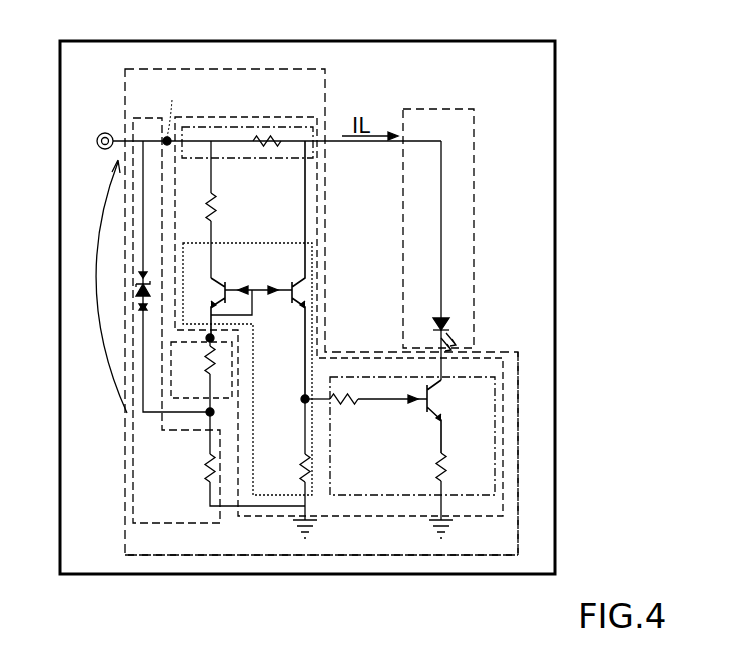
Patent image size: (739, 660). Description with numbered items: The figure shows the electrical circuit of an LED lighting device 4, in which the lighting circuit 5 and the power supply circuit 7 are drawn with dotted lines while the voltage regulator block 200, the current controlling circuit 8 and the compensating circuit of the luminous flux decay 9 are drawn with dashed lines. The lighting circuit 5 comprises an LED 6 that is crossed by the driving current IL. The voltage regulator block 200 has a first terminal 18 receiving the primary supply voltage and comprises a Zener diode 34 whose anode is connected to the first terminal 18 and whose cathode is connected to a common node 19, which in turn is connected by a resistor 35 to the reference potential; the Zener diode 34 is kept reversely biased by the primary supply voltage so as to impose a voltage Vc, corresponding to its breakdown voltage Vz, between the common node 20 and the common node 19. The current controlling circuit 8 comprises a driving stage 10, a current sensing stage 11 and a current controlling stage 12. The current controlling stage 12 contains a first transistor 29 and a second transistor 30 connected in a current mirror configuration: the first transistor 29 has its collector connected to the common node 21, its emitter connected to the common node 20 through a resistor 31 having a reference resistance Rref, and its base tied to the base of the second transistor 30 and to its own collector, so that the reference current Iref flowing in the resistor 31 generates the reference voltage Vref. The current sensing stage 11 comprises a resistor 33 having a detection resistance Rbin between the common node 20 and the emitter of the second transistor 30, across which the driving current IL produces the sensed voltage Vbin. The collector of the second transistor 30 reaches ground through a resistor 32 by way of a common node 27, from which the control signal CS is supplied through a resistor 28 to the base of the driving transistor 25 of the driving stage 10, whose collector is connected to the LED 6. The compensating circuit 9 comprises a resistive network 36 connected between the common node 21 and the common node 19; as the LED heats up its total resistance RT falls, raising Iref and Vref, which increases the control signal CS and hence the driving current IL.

The lighting device 4 is at (84, 573).
The lighting circuit 5 is at (474, 247).
The LED 6 is at (445, 323).
The power supply circuit 7 is at (152, 557).
The current controlling circuit 8 is at (358, 520).
The compensating circuit of the luminous flux decay 9 is at (171, 388).
The driving stage 10 is at (518, 467).
The current sensing stage 11 is at (288, 127).
The current controlling stage 12 is at (268, 502).
The first terminal 18 is at (97, 143).
The common node 19 is at (214, 412).
The common node 20 is at (165, 137).
The common node 21 is at (214, 338).
The driving transistor 25 is at (433, 400).
The common node 27 is at (301, 399).
The resistor 28 is at (345, 403).
The first transistor 29 is at (235, 270).
The second transistor 30 is at (293, 281).
The resistor 31 is at (214, 214).
The resistor 32 is at (302, 462).
The resistor 33 is at (206, 468).
The Zener diode 34 is at (140, 297).
The resistor 35 is at (258, 148).
The resistive network 36 is at (207, 356).
The voltage regulator block 200 is at (128, 470).